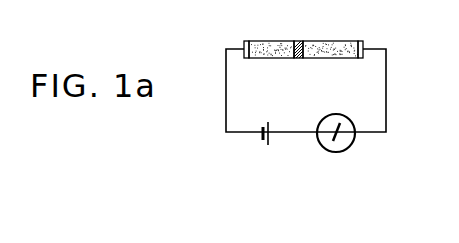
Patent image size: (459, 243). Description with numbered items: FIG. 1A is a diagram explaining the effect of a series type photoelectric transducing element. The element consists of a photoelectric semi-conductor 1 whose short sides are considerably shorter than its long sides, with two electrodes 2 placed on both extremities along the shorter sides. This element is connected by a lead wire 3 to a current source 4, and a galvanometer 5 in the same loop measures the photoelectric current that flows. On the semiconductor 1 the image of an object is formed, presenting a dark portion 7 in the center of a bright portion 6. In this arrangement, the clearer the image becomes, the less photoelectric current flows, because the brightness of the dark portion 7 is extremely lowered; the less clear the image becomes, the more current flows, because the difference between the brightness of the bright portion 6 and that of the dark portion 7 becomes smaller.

The photoelectric semi-conductor 1 is at (272, 41).
The electrodes 2 is at (246, 41).
The lead wire 3 is at (386, 87).
The current source 4 is at (267, 120).
The galvanometer 5 is at (352, 146).
The bright portion 6 is at (331, 41).
The dark portion 7 is at (298, 41).